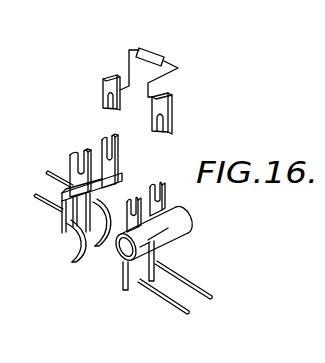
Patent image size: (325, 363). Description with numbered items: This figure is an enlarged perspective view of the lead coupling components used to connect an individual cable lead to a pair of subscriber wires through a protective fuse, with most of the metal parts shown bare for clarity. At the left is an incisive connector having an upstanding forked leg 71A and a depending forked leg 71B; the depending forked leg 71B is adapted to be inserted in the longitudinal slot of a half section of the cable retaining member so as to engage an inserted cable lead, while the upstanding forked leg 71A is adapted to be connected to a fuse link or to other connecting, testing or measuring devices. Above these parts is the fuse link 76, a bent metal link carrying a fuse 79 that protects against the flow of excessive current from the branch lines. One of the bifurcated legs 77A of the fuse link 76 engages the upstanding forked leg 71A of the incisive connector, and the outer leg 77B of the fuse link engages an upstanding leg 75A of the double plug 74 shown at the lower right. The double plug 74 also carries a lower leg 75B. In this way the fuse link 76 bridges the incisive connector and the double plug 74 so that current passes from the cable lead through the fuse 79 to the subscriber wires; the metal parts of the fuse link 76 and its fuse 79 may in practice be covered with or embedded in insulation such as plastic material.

The fuse link 76 is at (184, 62).
The fuse 79 is at (151, 48).
The bifurcated leg 77A is at (100, 97).
The outer leg 77B is at (184, 125).
The upstanding forked leg 71A is at (79, 150).
The depending forked leg 71B is at (63, 231).
The double plug 74 is at (121, 254).
The upstanding leg 75A is at (180, 243).
The terminal legs 75B is at (130, 284).